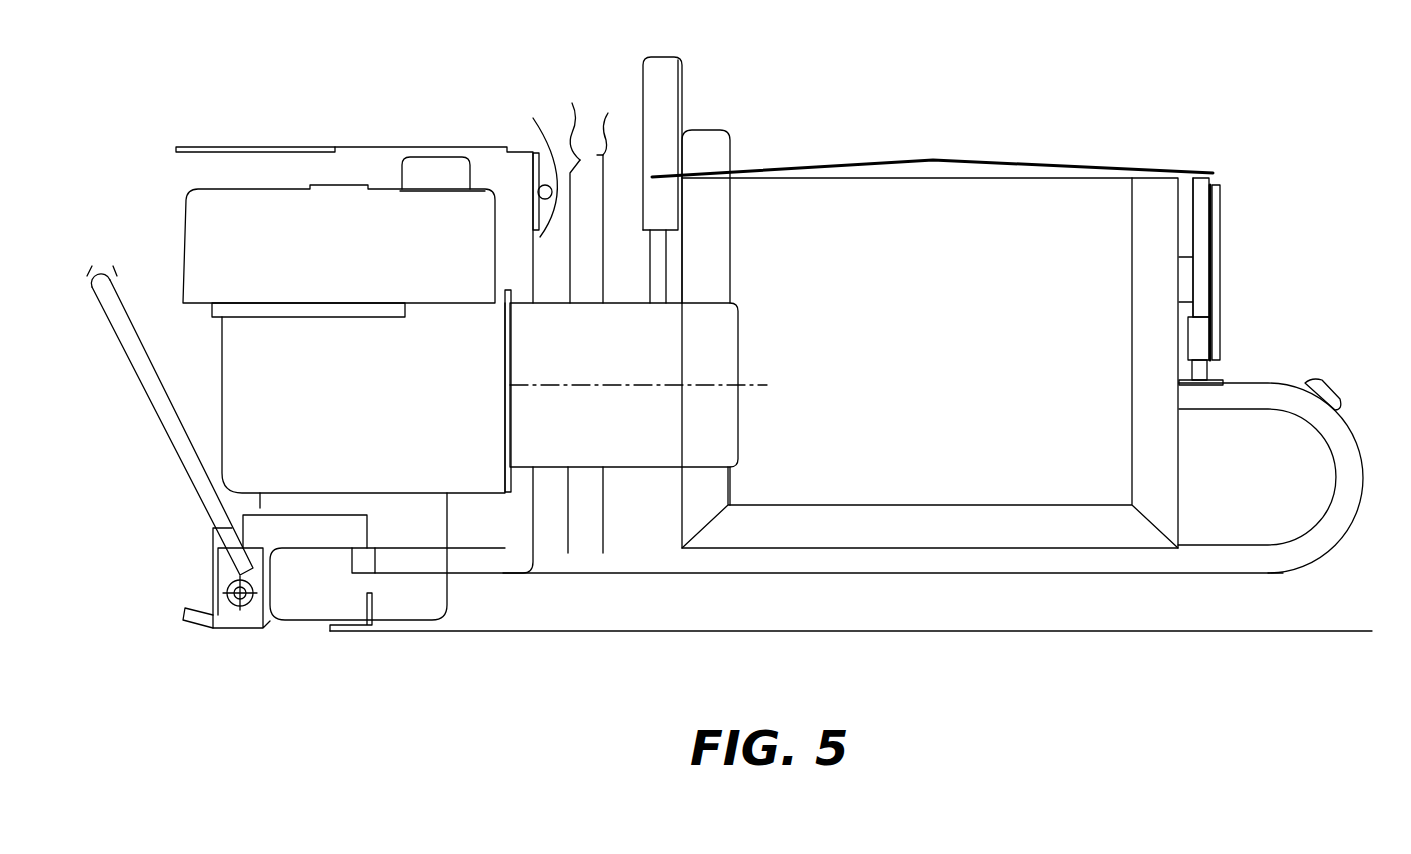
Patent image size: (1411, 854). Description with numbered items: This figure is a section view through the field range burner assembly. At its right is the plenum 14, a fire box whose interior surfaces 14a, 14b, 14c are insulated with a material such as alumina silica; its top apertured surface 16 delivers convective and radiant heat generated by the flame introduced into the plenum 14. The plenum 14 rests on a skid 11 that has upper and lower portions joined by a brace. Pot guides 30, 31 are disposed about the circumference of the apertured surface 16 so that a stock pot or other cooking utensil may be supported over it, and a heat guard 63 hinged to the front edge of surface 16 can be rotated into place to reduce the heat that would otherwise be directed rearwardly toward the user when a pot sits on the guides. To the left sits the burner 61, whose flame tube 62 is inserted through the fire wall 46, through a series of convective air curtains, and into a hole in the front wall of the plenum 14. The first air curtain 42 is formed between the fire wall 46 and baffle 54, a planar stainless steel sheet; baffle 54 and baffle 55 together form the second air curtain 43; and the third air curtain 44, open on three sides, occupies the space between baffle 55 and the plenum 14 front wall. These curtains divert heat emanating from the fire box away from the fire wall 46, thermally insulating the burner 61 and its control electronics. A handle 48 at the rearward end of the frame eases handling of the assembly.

The skid 11 is at (1342, 443).
The plenum 14 is at (946, 347).
The interior surface 14a is at (917, 526).
The interior surface 14b is at (1147, 263).
The interior surface 14c is at (707, 250).
The apertured surface 16 is at (1017, 163).
The pot guide 30 is at (684, 68).
The pot guide 31 is at (1222, 250).
The convective air curtain 42 is at (565, 265).
The convective air curtain 43 is at (597, 265).
The convective air curtain 44 is at (637, 265).
The fire wall 46 is at (532, 169).
The handle 48 is at (147, 398).
The baffle 54 is at (563, 120).
The baffle 55 is at (623, 128).
The burner 61 is at (376, 410).
The flame tube 62 is at (635, 424).
The heat guard 63 is at (733, 147).